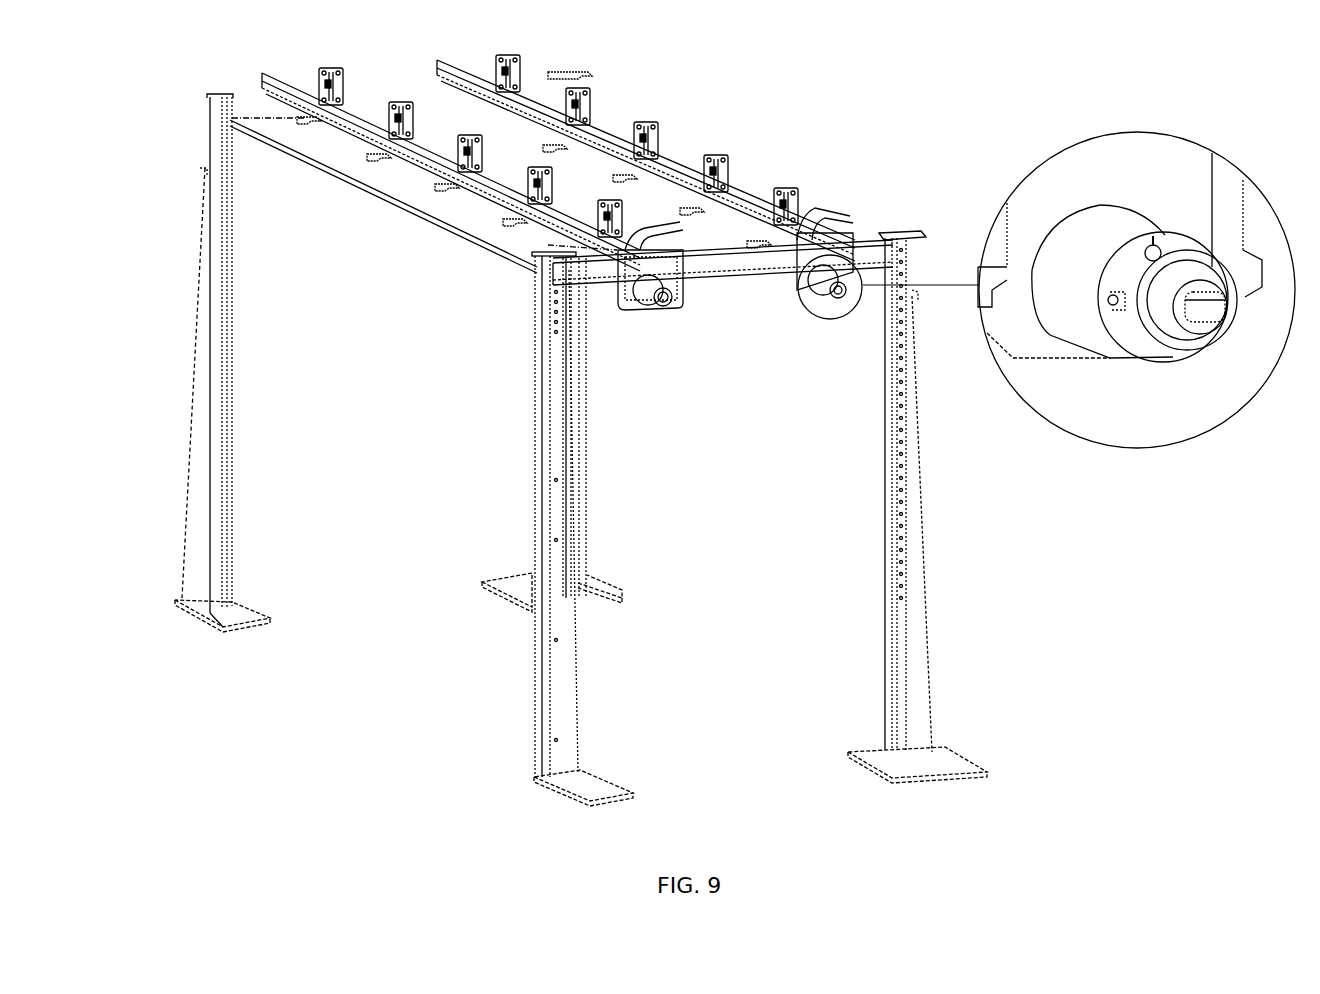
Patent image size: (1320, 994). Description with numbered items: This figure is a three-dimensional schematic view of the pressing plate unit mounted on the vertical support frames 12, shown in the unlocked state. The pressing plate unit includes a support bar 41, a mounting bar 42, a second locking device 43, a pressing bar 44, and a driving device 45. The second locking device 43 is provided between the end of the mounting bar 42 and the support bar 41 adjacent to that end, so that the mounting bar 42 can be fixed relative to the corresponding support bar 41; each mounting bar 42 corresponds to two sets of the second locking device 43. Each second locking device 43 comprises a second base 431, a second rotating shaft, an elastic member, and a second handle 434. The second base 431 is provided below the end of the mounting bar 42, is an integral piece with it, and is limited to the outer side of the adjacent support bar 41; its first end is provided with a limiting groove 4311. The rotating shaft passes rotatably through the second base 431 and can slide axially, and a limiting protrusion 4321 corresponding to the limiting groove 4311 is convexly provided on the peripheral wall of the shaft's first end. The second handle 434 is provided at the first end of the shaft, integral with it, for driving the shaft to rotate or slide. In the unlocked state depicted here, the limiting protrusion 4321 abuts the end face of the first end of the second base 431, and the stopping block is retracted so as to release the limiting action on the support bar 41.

The vertical support frame 12 is at (210, 352).
The support bar 41 is at (733, 270).
The mounting bar 42 is at (365, 137).
The second locking device 43 is at (663, 310).
The pressing bar 44 is at (433, 207).
The driving device 45 is at (513, 197).
The second base 431 is at (1100, 217).
The limiting groove 4311 is at (1152, 235).
The limiting protrusion 4321 is at (1115, 303).
The second handle 434 is at (1207, 320).